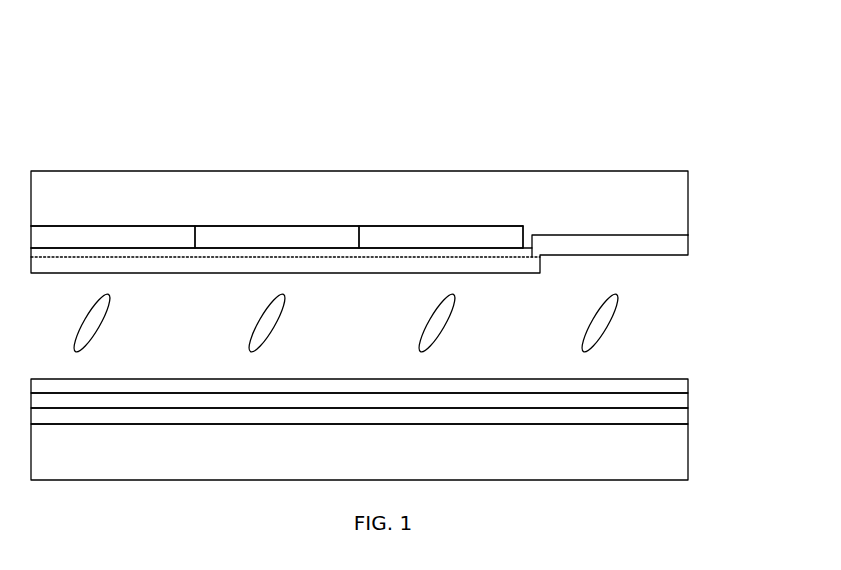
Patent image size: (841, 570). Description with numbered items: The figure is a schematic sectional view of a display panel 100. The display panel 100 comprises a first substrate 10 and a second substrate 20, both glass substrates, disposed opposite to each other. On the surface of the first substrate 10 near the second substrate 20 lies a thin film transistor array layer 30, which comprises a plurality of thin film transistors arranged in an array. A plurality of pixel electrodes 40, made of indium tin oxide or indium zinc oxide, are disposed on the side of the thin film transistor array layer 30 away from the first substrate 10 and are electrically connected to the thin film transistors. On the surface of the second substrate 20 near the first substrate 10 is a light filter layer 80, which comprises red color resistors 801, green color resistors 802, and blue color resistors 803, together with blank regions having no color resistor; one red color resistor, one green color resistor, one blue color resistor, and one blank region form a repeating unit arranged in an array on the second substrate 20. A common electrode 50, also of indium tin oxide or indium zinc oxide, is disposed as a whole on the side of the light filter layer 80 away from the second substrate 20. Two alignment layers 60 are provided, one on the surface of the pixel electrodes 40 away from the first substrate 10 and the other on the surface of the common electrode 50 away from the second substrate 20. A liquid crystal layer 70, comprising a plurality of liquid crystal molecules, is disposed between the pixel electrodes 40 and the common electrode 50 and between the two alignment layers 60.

The display panel 100 is at (82, 56).
The first substrate 10 is at (689, 470).
The second substrate 20 is at (682, 205).
The thin film transistor array layer 30 is at (689, 416).
The pixel electrodes 40 is at (689, 400).
The common electrode 50 is at (683, 228).
The alignment layers 60 is at (683, 245).
The liquid crystal layer 70 is at (690, 260).
The light filter layer 80 is at (277, 164).
The red color resistors 801 is at (128, 235).
The green color resistors 802 is at (253, 235).
The blue color resistors 803 is at (441, 190).